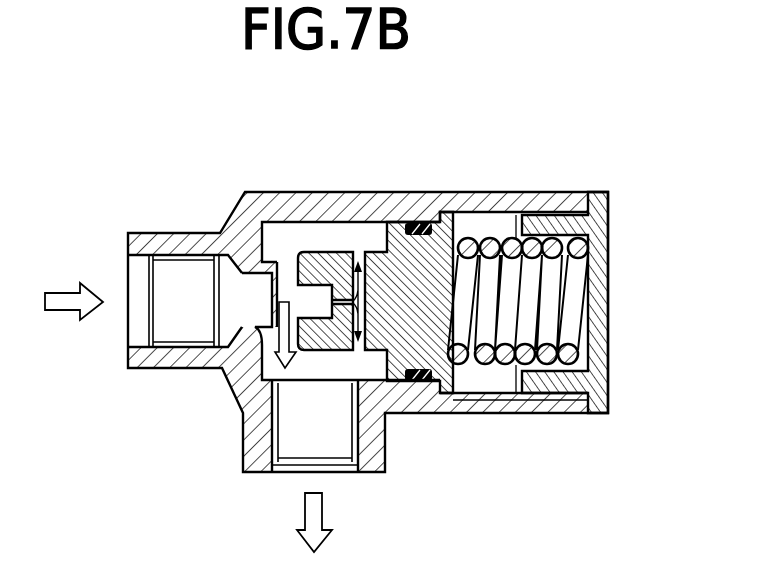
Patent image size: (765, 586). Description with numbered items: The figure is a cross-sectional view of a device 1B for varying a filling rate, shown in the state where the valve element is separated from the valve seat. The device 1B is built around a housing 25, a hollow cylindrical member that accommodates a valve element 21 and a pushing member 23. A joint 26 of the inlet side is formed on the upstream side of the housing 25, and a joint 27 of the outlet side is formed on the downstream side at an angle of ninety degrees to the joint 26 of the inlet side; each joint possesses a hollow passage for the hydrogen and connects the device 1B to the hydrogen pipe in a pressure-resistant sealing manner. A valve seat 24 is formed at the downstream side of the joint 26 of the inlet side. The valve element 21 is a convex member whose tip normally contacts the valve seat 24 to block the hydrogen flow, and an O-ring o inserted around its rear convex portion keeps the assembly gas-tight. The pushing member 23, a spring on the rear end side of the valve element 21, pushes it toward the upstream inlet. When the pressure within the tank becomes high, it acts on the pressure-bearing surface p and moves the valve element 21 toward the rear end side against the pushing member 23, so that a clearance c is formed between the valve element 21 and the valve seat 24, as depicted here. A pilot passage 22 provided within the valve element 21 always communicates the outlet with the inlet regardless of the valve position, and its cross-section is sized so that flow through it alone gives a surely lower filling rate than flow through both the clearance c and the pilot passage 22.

The device for varying a filling rate 1B is at (233, 184).
The joint of inlet side 26 is at (172, 240).
The valve seat 24 is at (266, 340).
The clearance c is at (288, 270).
The pilot passage 22 is at (358, 252).
The valve element 21 is at (398, 245).
The O-ring o is at (424, 222).
The pushing member 23 is at (478, 240).
The housing 25 is at (555, 200).
The joint of outlet side 27 is at (247, 445).
The pressure-bearing surface p is at (387, 420).